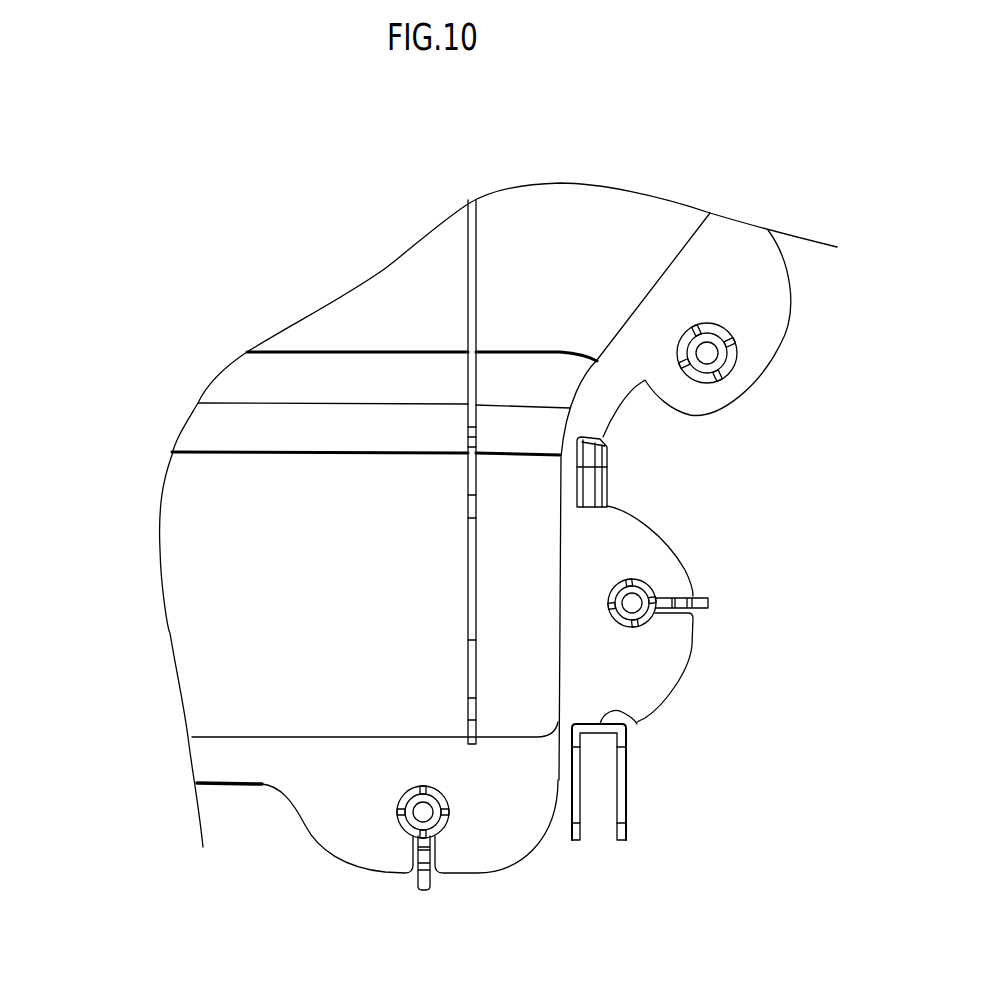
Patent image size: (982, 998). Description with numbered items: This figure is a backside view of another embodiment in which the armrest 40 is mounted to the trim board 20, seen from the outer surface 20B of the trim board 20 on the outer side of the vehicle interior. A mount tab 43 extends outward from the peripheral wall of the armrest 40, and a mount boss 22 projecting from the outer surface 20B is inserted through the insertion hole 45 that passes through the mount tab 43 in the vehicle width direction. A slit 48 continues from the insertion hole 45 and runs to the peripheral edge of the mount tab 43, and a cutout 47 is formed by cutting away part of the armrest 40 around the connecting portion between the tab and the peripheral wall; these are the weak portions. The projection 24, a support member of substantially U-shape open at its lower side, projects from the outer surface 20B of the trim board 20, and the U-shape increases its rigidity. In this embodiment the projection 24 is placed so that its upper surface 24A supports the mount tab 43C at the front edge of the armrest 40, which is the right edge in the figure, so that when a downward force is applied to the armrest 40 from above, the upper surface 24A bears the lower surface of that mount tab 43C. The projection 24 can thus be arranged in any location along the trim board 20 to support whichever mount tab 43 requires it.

The armrest 40 is at (194, 581).
The mount tab 43 is at (500, 837).
The mount tab at the front edge 43C is at (665, 676).
The cutout 47 is at (590, 500).
The insertion hole 45 is at (650, 593).
The mount boss 22 is at (633, 607).
The slit 48 is at (673, 597).
The projection 24 is at (636, 731).
The upper surface of the projection 24A is at (627, 733).
The outer surface of the trim board 20B is at (218, 817).
The trim board 20 is at (157, 806).